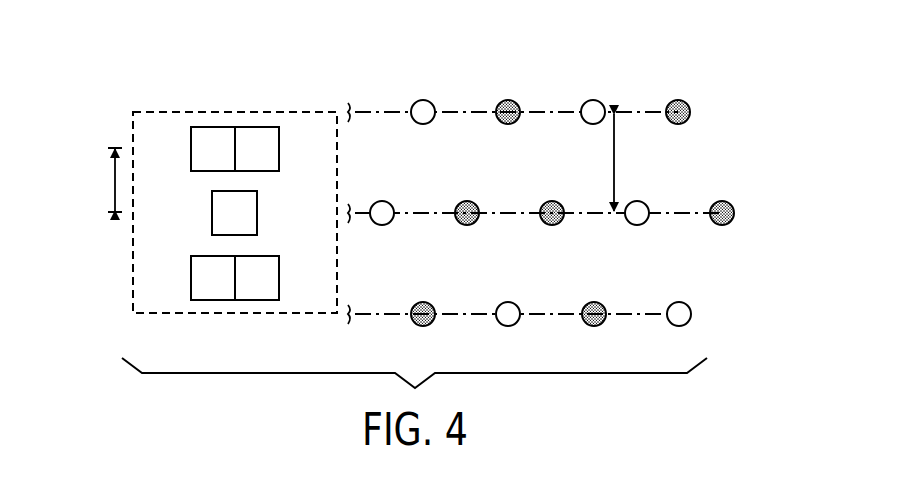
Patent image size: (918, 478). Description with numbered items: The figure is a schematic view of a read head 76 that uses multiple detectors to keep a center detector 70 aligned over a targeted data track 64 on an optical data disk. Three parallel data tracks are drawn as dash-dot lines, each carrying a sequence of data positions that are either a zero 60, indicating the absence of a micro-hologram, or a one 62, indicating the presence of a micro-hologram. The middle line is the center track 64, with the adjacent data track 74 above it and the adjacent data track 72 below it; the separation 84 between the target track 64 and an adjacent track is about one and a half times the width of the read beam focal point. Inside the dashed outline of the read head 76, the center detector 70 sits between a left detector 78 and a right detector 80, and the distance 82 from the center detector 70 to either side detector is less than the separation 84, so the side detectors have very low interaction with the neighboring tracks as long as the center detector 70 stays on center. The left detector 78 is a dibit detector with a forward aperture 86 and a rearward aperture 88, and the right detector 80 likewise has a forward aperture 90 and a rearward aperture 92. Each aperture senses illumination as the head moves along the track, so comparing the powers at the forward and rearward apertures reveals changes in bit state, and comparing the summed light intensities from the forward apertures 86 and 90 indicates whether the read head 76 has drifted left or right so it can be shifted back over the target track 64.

The zero 60 is at (428, 101).
The one 62 is at (510, 101).
The center track 64 is at (680, 216).
The center detector 70 is at (212, 204).
The data track 72 is at (647, 312).
The data track 74 is at (627, 112).
The read head 76 is at (136, 64).
The left detector 78 is at (181, 146).
The right detector 80 is at (173, 281).
The distance 82 is at (115, 177).
The separation 84 is at (614, 155).
The forward aperture 86 is at (257, 127).
The rearward aperture 88 is at (212, 127).
The forward aperture 90 is at (257, 300).
The rearward aperture 92 is at (220, 300).